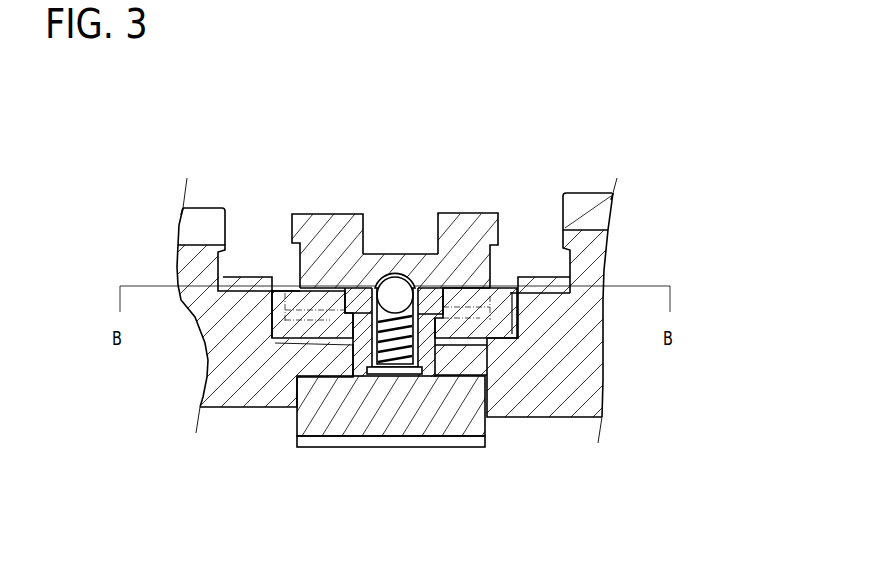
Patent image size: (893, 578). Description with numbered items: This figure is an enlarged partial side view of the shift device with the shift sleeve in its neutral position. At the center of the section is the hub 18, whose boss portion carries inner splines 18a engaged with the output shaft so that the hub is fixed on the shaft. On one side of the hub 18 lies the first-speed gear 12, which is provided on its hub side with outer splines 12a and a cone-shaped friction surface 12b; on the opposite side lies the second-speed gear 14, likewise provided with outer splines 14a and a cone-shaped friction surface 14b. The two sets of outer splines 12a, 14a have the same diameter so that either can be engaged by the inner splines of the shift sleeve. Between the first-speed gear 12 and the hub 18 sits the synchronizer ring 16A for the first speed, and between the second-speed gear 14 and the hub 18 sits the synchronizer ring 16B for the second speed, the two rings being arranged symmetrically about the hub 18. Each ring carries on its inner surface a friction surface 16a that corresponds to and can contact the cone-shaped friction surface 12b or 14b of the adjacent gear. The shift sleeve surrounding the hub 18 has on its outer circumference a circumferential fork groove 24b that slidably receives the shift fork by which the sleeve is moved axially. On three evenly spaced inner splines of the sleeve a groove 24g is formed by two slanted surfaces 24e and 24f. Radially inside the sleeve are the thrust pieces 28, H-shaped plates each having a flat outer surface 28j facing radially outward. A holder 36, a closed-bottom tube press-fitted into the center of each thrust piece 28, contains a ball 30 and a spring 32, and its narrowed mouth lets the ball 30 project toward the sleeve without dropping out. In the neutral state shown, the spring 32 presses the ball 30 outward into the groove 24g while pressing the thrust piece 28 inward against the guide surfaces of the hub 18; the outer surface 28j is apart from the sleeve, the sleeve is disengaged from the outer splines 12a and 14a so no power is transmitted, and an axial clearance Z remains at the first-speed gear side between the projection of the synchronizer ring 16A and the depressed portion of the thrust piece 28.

The first-speed gear 12 is at (603, 390).
The outer splines 12a is at (613, 194).
The cone-shaped friction surface 12b is at (530, 268).
The second-speed gear 14 is at (203, 390).
The outer splines 14a is at (213, 208).
The cone-shaped friction surface 14b is at (238, 218).
The synchronizer ring 16A is at (480, 275).
The synchronizer ring 16B is at (273, 276).
The friction surface 16a is at (258, 408).
The hub 18 is at (387, 407).
The inner splines 18a is at (403, 441).
The circumferential fork groove 24b is at (403, 272).
The slanted surface 24e is at (375, 280).
The slanted surface 24f is at (440, 256).
The groove 24g is at (395, 292).
The thrust piece 28 is at (329, 300).
The outer surface 28j is at (313, 290).
The ball 30 is at (418, 262).
The spring 32 is at (393, 375).
The holder 36 is at (440, 382).
The axial clearance Z is at (505, 284).